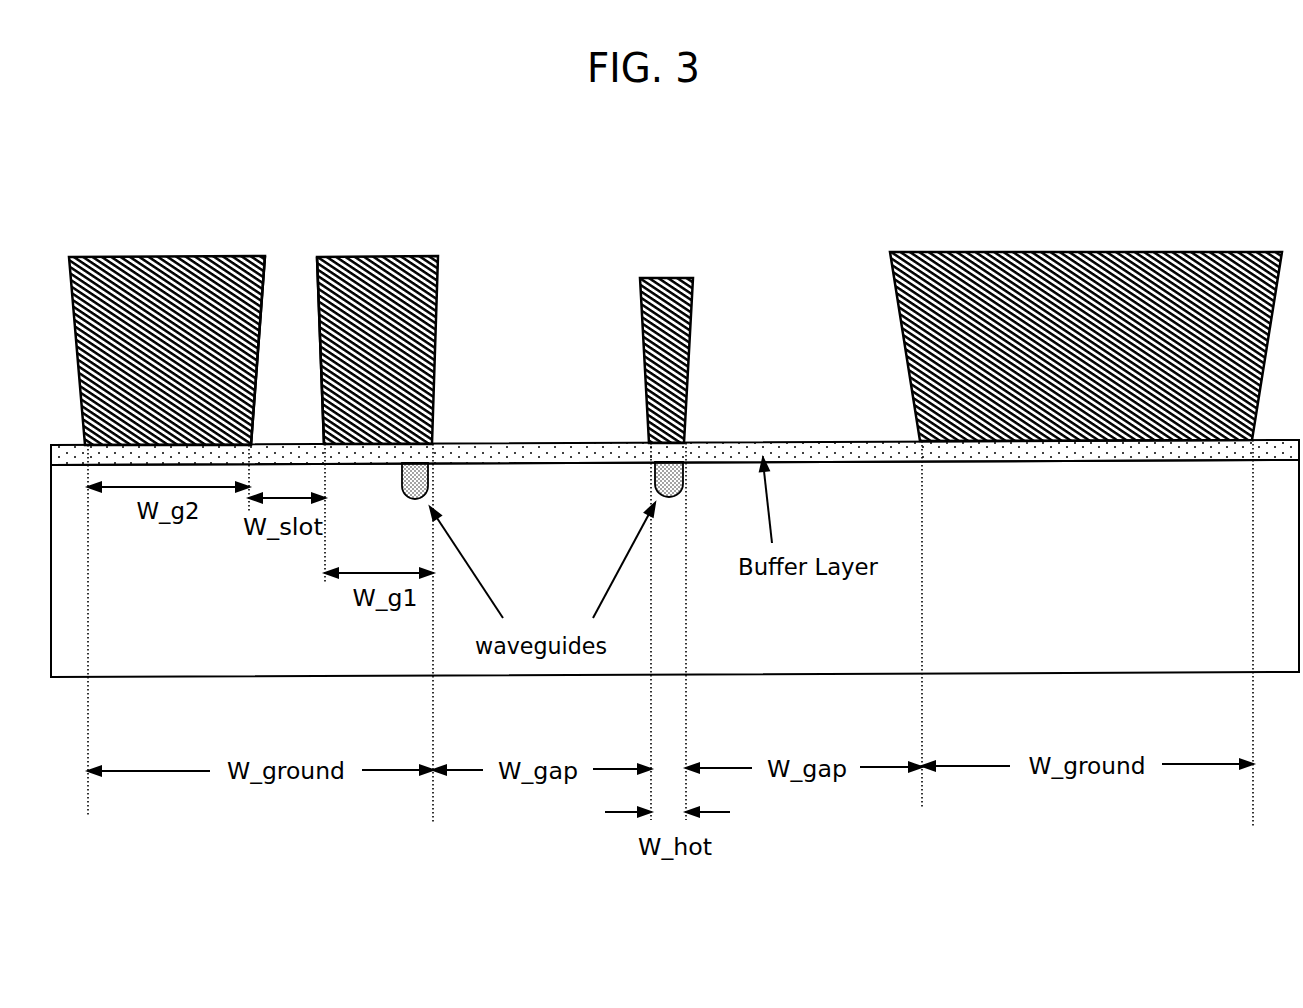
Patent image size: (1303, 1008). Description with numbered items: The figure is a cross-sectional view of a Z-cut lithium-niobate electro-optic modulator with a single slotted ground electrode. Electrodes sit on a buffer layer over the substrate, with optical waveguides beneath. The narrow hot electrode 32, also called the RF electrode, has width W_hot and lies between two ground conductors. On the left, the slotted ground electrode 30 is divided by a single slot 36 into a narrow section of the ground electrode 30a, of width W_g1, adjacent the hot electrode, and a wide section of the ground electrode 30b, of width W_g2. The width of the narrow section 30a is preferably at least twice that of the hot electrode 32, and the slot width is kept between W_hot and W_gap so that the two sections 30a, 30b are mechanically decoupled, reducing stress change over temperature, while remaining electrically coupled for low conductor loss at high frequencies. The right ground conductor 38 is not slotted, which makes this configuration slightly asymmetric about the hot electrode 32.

The slotted ground electrode 30 is at (403, 240).
The narrow section of the ground electrode 30a is at (415, 267).
The wide section of the ground electrode 30b is at (100, 340).
The hot electrode 32 is at (677, 296).
The slot 36 is at (299, 425).
The right ground conductor 38 is at (1208, 266).